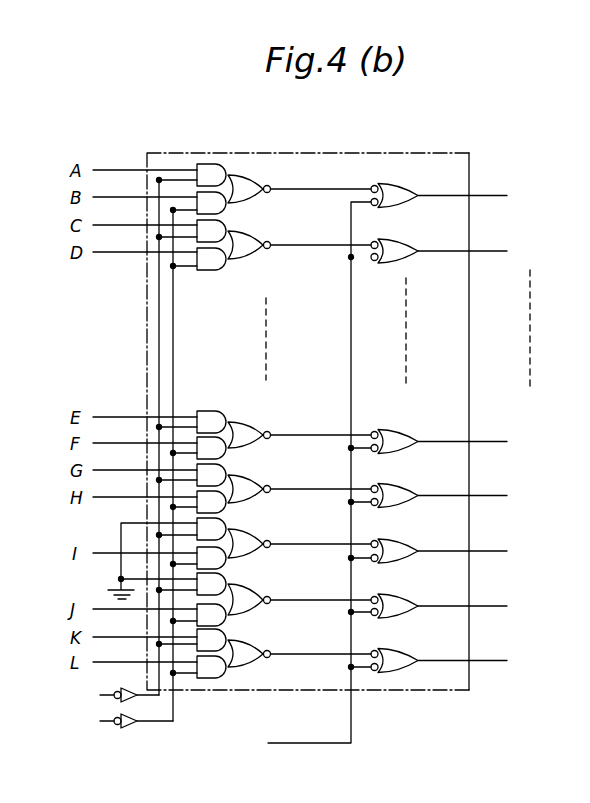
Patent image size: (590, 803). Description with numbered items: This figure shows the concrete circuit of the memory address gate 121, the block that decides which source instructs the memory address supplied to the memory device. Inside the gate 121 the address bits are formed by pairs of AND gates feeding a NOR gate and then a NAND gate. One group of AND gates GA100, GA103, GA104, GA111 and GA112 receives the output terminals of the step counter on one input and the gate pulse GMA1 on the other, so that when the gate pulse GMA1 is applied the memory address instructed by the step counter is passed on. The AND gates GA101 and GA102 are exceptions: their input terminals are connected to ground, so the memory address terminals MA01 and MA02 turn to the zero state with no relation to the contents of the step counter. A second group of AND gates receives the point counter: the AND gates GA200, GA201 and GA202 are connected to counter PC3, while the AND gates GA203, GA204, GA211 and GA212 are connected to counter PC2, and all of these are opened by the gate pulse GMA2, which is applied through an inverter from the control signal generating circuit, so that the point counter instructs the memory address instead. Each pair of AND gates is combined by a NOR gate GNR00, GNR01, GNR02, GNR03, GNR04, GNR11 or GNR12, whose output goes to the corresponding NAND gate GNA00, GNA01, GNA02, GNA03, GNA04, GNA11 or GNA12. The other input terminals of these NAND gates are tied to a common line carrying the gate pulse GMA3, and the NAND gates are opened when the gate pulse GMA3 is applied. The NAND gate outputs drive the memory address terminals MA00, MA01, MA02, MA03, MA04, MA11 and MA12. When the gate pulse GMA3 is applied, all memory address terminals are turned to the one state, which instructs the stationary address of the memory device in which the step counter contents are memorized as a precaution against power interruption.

The memory address gate 121 is at (312, 153).
The AND gate GA112 is at (207, 164).
The AND gate GA212 is at (248, 206).
The NOR gate GNR12 is at (265, 184).
The AND gate GA111 is at (246, 229).
The AND gate GA211 is at (217, 271).
The NOR gate GNR11 is at (266, 252).
The NAND gate GNA12 is at (392, 184).
The NAND gate GNA11 is at (392, 240).
The memory address terminal MA12 is at (490, 190).
The memory address terminal MA11 is at (490, 245).
The AND gate GA104 is at (222, 417).
The AND gate GA204 is at (228, 455).
The NOR gate GNR04 is at (275, 440).
The AND gate GA103 is at (232, 471).
The AND gate GA203 is at (228, 508).
The NOR gate GNR03 is at (275, 494).
The AND gate GA102 is at (240, 529).
The AND gate GA202 is at (220, 566).
The NOR gate GNR02 is at (273, 550).
The AND gate GA101 is at (240, 584).
The AND gate GA201 is at (224, 620).
The NOR gate GNR01 is at (274, 605).
The AND gate GA100 is at (236, 639).
The AND gate GA200 is at (216, 676).
The NOR gate GNR00 is at (274, 660).
The NAND gate GNA04 is at (387, 430).
The NAND gate GNA03 is at (389, 484).
The NAND gate GNA02 is at (389, 540).
The NAND gate GNA01 is at (389, 594).
The NAND gate GNA00 is at (389, 649).
The memory address terminal MA04 is at (490, 436).
The memory address terminal MA03 is at (490, 491).
The memory address terminal MA02 is at (490, 546).
The memory address terminal MA01 is at (490, 600).
The memory address terminal MA00 is at (490, 656).
The gate pulse GMA1 is at (97, 695).
The gate pulse GMA2 is at (104, 722).
The gate pulse GMA3 is at (285, 478).